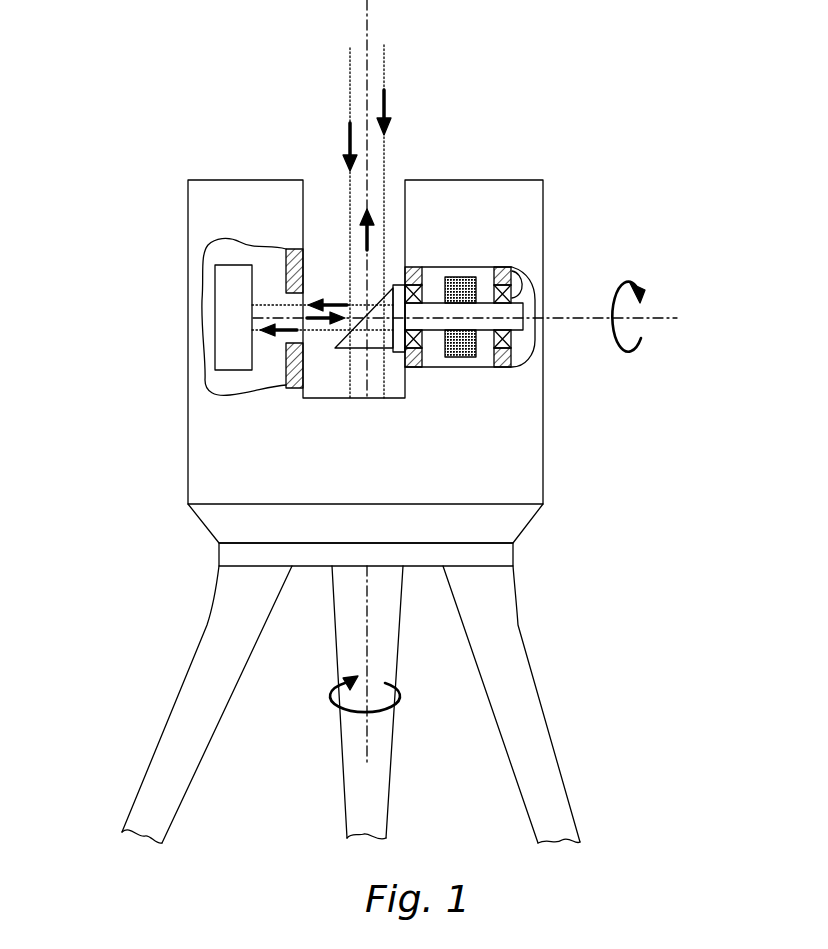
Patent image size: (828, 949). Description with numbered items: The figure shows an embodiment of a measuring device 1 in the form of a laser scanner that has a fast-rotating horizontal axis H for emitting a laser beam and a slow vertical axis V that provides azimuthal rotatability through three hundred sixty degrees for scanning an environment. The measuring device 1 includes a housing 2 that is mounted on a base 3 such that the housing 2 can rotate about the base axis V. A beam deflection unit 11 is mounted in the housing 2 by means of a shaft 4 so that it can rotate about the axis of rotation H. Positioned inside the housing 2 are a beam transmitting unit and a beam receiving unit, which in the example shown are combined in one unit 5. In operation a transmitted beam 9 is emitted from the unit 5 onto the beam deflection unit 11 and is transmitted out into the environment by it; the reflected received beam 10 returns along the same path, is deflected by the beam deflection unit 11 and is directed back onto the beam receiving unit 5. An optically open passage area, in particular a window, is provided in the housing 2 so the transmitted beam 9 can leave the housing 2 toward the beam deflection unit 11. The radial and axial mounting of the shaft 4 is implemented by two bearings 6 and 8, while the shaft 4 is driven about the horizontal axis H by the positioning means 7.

The measuring device 1 is at (128, 96).
The housing 2 is at (522, 452).
The base 3 is at (505, 554).
The shaft 4 is at (437, 323).
The beam transmitting and receiving unit 5 is at (227, 307).
The bearing 6 is at (517, 290).
The positioning means 7 is at (460, 276).
The bearing 8 is at (427, 290).
The transmitted beam 9 is at (365, 240).
The received beam 10 is at (363, 60).
The beam deflection unit 11 is at (336, 370).
The horizontal axis H is at (588, 320).
The vertical axis V is at (367, 660).